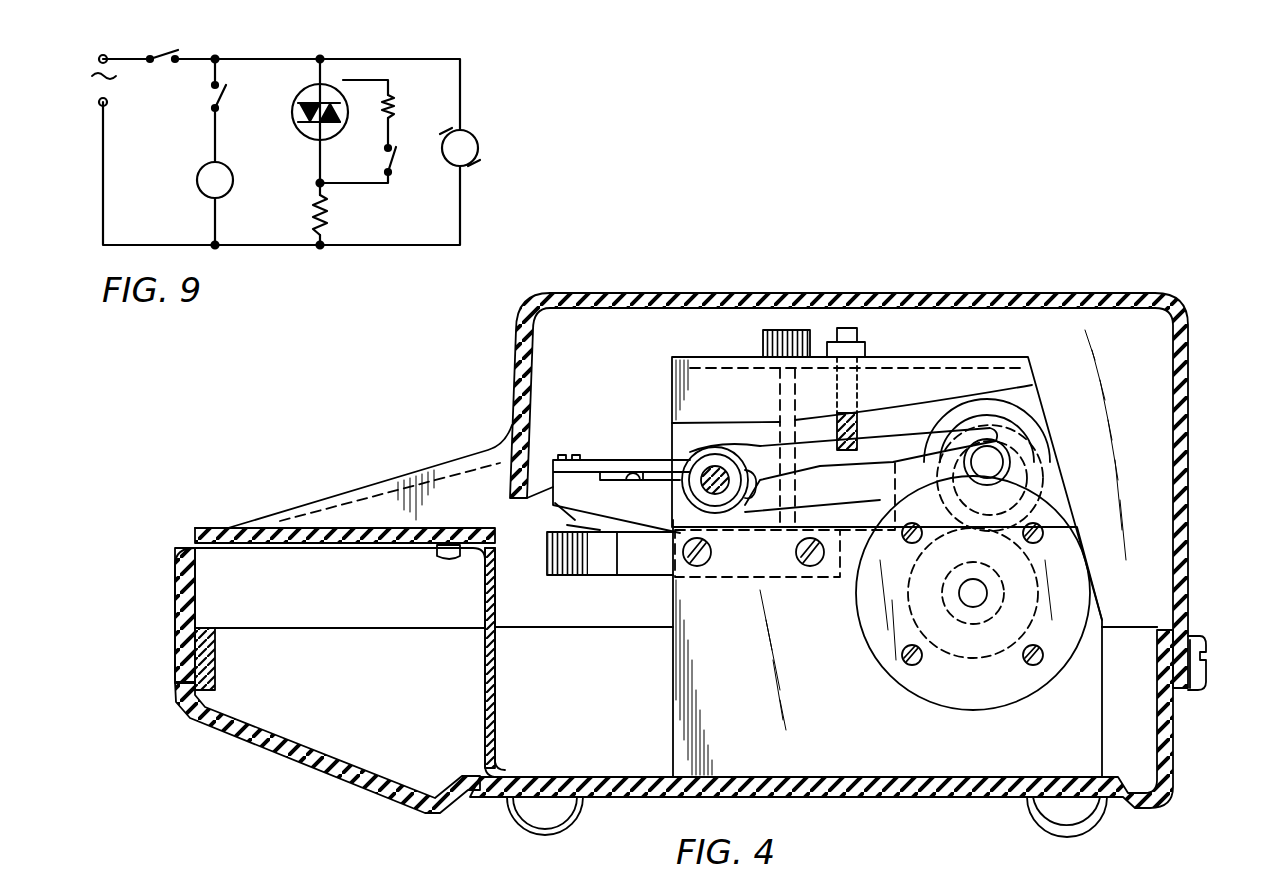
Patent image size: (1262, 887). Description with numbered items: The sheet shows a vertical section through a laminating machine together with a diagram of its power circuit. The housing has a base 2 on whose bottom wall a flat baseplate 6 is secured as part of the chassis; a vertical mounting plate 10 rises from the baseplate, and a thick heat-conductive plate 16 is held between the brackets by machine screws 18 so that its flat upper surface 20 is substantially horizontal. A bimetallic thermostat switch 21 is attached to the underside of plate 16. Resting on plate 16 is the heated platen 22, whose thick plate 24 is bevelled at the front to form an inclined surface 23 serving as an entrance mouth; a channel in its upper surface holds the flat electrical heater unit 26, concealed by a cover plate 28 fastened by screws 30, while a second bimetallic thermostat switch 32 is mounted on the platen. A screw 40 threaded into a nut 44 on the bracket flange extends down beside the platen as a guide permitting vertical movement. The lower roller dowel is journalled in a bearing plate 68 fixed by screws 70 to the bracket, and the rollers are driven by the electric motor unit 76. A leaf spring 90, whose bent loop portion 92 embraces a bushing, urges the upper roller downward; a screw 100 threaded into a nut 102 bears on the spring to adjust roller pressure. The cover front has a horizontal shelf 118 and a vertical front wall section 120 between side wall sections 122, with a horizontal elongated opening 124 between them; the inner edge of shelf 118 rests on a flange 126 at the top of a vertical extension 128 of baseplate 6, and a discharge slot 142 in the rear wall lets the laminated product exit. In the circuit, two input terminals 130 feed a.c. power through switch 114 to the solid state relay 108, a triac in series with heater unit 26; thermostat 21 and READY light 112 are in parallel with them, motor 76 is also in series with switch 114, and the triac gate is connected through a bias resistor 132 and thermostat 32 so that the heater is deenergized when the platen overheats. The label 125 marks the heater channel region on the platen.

In FIG. 4, the base 2 is at (275, 779).
In FIG. 4, the baseplate 6 is at (577, 778).
In FIG. 4, the mounting plate 10 is at (673, 683).
In FIG. 4, the plate 16 is at (585, 560).
In FIG. 4, the machine screws 18 is at (698, 566).
In FIG. 4, the flat upper surface 20 is at (567, 527).
In FIG. 9, the bimetallic thermostat switch 21 is at (224, 92).
In FIG. 4, the heated platen 22 is at (606, 437).
In FIG. 4, the inclined surface 23 is at (565, 522).
In FIG. 4, the platen plate 24 is at (560, 488).
In FIG. 9, the heater unit 26 is at (318, 213).
In FIG. 4, the heater unit 26 is at (613, 470).
In FIG. 4, the cover plate 28 is at (651, 460).
In FIG. 4, the screws 30 is at (562, 455).
In FIG. 9, the bimetallic thermostat switch 32 is at (398, 163).
In FIG. 4, the screw 40 is at (790, 406).
In FIG. 4, the nut 44 is at (758, 368).
In FIG. 4, the bearing plate 68 is at (863, 620).
In FIG. 4, the screws 70 is at (1040, 662).
In FIG. 9, the electric motor unit 76 is at (478, 133).
In FIG. 4, the leaf spring 90 is at (900, 440).
In FIG. 4, the loop portion 92 is at (781, 480).
In FIG. 4, the screw 100 is at (864, 425).
In FIG. 4, the nut 102 is at (878, 378).
In FIG. 9, the solid state relay 108 is at (300, 104).
In FIG. 9, the READY light 112 is at (198, 178).
In FIG. 9, the switch 114 is at (168, 52).
In FIG. 4, the horizontal shelf 118 is at (328, 524).
In FIG. 4, the vertical front wall section 120 is at (510, 472).
In FIG. 4, the vertical side wall section 122 is at (398, 503).
In FIG. 4, the horizontal elongated opening 124 is at (508, 512).
In FIG. 4, the spring 125 is at (632, 482).
In FIG. 4, the flange 126 is at (437, 560).
In FIG. 4, the vertical extension 128 is at (485, 668).
In FIG. 9, the input terminals 130 is at (103, 55).
In FIG. 9, the bias resistor 132 is at (396, 98).
In FIG. 4, the discharge slot 142 is at (1190, 500).